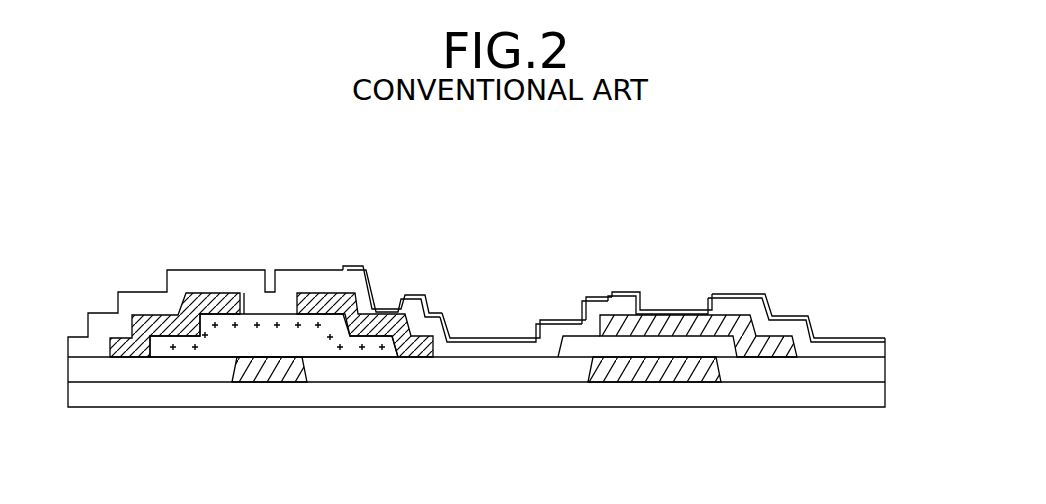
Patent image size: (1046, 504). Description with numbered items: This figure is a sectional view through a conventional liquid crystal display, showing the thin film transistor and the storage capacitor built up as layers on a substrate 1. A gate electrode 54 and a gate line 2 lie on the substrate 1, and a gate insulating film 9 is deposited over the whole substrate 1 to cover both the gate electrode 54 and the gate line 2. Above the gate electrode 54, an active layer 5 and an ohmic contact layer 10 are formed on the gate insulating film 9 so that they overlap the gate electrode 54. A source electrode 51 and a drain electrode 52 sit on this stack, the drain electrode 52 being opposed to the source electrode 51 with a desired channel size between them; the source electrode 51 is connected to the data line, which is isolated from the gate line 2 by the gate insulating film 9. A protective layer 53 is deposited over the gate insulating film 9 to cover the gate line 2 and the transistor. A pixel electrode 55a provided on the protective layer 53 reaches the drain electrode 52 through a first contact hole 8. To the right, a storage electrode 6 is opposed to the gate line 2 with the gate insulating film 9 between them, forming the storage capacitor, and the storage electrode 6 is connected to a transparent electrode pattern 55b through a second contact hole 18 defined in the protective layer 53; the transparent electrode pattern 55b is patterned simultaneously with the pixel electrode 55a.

The substrate 1 is at (808, 398).
The gate line 2 is at (690, 382).
The active layer 5 is at (362, 346).
The storage electrode 6 is at (692, 318).
The first contact hole 8 is at (386, 307).
The gate insulating film 9 is at (879, 371).
The ohmic contact layer 10 is at (241, 307).
The second contact hole 18 is at (672, 298).
The source electrode 51 is at (220, 299).
The drain electrode 52 is at (316, 294).
The protective layer 53 is at (879, 347).
The gate electrode 54 is at (272, 381).
The pixel electrode 55a is at (457, 340).
The transparent electrode pattern 55b is at (818, 338).